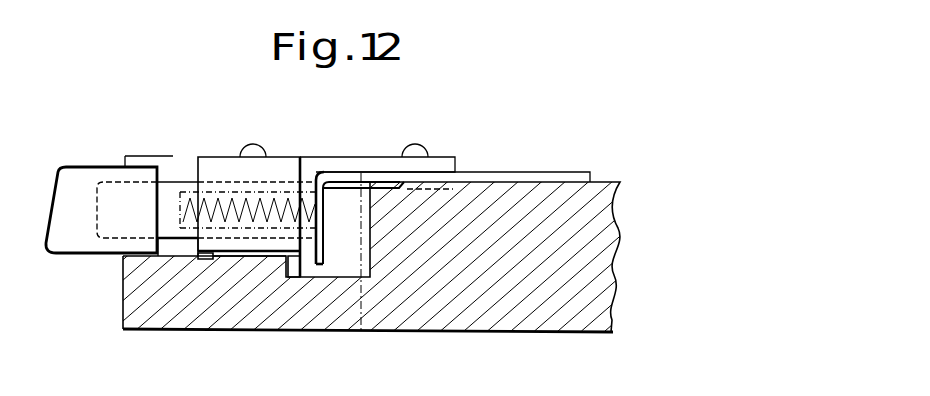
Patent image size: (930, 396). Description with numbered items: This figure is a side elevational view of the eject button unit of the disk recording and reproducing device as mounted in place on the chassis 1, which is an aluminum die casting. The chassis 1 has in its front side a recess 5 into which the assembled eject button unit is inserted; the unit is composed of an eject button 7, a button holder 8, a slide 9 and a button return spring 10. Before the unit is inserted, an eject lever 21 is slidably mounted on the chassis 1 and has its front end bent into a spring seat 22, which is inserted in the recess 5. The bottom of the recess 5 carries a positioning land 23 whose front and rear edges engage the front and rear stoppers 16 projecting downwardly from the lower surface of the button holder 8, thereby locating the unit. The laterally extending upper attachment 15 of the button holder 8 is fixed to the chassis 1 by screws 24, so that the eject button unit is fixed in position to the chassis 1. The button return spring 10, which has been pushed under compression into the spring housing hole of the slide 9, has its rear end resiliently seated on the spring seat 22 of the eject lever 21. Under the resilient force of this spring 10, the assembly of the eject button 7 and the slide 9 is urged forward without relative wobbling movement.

The chassis 1 is at (328, 317).
The recess 5 is at (178, 254).
The eject button 7 is at (66, 165).
The button holder 8 is at (215, 167).
The slide 9 is at (170, 197).
The button return spring 10 is at (265, 206).
The upper attachment 15 is at (348, 163).
The stoppers 16 is at (206, 259).
The eject lever 21 is at (521, 173).
The spring seat 22 is at (320, 266).
The positioning land 23 is at (244, 257).
The screws 24 is at (251, 146).